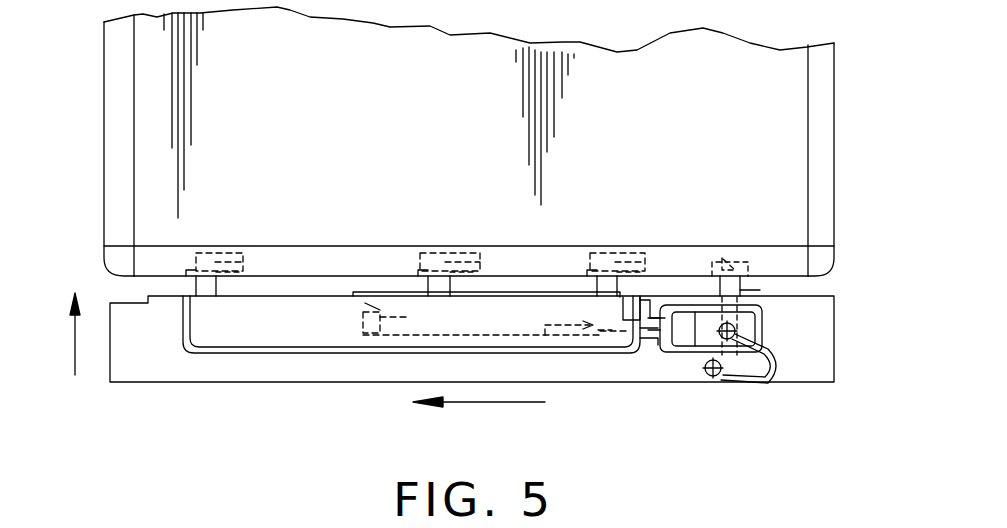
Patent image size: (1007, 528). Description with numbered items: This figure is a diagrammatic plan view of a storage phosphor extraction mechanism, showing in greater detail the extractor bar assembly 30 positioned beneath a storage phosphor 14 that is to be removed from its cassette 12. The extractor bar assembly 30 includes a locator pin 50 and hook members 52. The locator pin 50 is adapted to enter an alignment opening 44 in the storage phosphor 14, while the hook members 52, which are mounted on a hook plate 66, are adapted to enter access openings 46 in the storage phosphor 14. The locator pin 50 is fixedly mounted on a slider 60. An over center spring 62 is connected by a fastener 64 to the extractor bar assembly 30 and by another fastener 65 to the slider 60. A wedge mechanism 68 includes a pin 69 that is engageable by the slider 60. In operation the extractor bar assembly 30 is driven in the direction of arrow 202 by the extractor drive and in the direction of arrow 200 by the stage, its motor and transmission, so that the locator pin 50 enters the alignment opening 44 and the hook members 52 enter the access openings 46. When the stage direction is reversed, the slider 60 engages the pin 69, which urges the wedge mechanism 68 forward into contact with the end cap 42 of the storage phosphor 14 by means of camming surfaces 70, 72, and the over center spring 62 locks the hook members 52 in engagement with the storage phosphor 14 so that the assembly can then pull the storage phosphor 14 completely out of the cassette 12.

The cassette 12 is at (836, 140).
The storage phosphor 14 is at (150, 169).
The extractor bar assembly 30 is at (838, 350).
The end cap 42 is at (150, 273).
The alignment opening 44 is at (745, 274).
The access openings 46 is at (266, 270).
The locator pin 50 is at (742, 292).
The hook members 52 is at (218, 255).
The slider 60 is at (765, 323).
The over center spring 62 is at (783, 365).
The fastener 64 is at (722, 378).
The fastener 65 is at (765, 308).
The hook plate 66 is at (260, 337).
The wedge mechanism 68 is at (435, 318).
The pin 69 is at (656, 333).
The camming surface 70 is at (365, 303).
The camming surface 72 is at (598, 330).
The arrow 200 is at (508, 404).
The arrow 202 is at (77, 357).